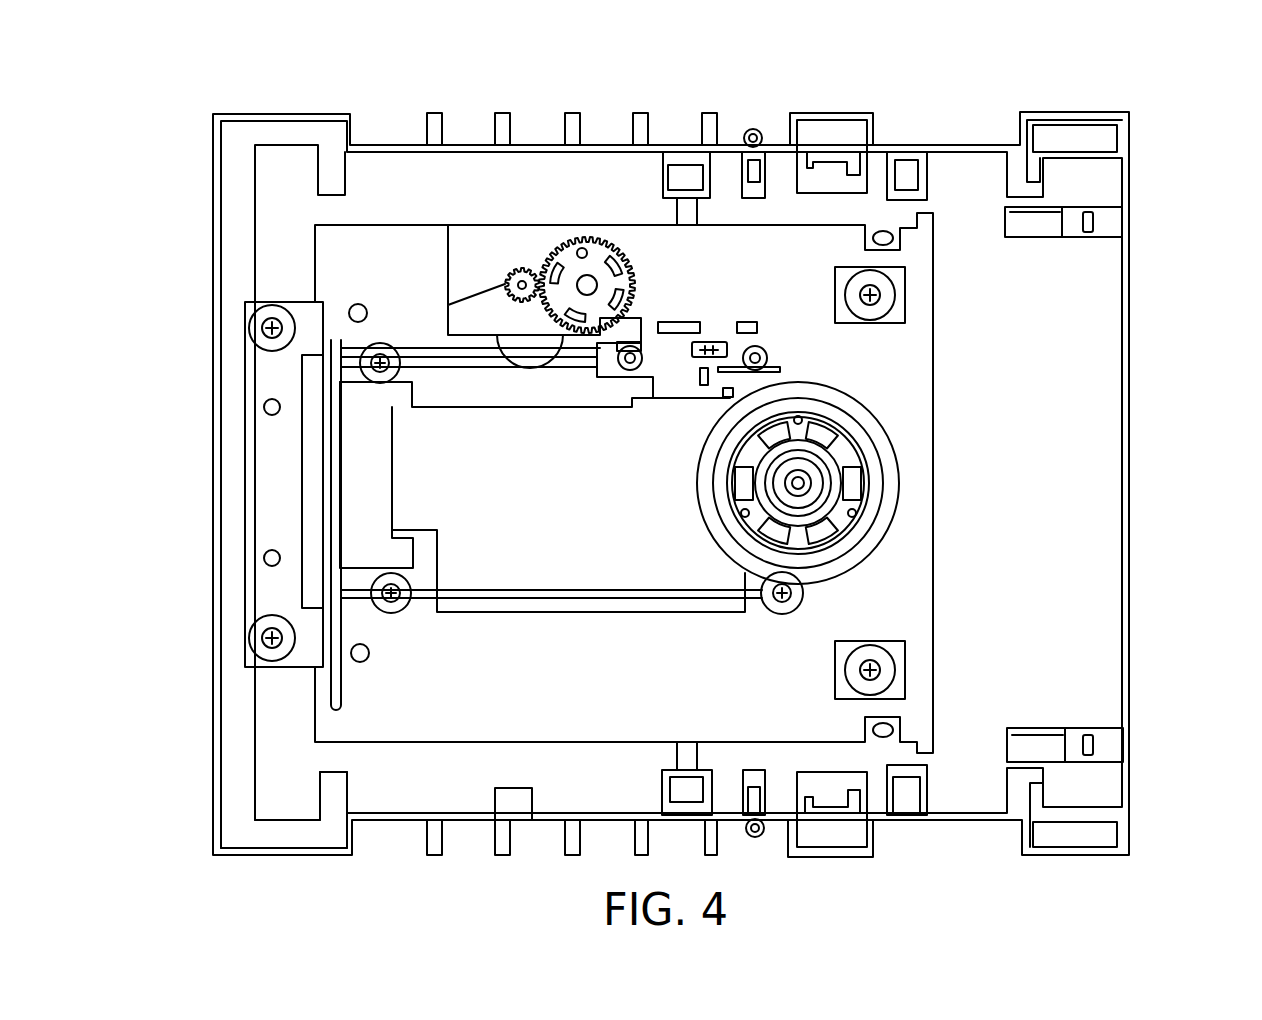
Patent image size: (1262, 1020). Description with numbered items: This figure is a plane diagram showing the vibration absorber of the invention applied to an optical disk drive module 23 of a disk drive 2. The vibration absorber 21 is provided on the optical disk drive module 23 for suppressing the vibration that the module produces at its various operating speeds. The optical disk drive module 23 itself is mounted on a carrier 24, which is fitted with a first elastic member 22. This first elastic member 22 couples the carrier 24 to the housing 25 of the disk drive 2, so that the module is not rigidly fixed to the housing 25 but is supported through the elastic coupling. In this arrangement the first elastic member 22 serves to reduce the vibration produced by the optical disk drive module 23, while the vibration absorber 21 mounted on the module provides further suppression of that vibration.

The disk drive 2 is at (1037, 510).
The vibration absorber 21 is at (710, 340).
The first elastic member 22 is at (265, 648).
The optical disk drive module 23 is at (670, 358).
The carrier 24 is at (265, 483).
The housing 25 is at (282, 797).